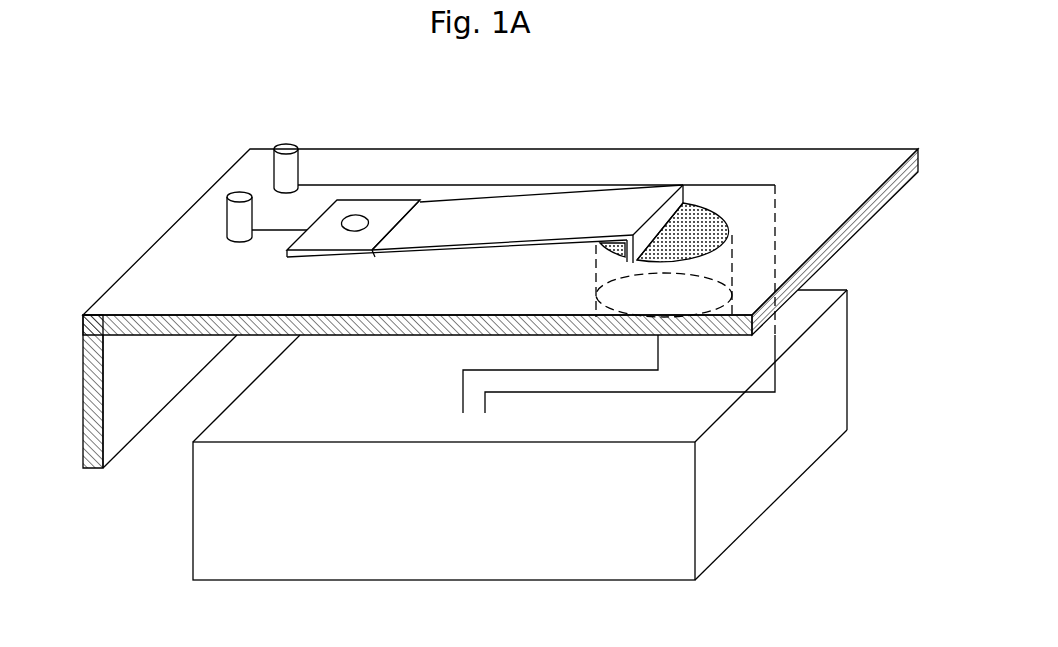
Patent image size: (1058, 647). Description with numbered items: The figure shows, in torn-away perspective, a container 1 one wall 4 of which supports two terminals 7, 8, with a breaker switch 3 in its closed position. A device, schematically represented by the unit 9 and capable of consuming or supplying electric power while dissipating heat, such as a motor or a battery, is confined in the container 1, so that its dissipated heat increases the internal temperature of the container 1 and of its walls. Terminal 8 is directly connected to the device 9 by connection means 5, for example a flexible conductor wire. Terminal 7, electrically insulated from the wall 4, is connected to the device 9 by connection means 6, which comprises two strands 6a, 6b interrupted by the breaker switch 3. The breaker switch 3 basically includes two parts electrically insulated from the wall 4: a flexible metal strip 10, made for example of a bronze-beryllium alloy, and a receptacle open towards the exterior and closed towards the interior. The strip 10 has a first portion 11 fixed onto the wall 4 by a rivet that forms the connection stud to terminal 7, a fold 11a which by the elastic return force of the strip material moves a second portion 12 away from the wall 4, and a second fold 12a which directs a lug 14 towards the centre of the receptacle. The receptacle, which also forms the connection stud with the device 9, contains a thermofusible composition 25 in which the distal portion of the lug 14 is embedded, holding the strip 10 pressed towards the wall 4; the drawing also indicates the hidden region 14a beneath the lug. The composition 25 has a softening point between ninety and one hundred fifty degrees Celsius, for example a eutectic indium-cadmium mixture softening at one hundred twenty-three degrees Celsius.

The container 1 is at (500, 286).
The breaker switch 3 is at (552, 195).
The wall 4 is at (171, 279).
The connection means 5 is at (349, 184).
The connection means 6 is at (461, 346).
The strand 6a is at (270, 233).
The strand 6b is at (462, 385).
The terminal 7 is at (238, 194).
The terminal 8 is at (286, 146).
The device (unit) 9 is at (743, 482).
The flexible metal strip 10 is at (560, 188).
The first portion 11 is at (390, 210).
The fold 11a is at (402, 217).
The second portion 12 is at (487, 217).
The second fold 12a is at (655, 200).
The lug 14 is at (683, 200).
The counter electrode (hidden) 14a is at (640, 296).
The thermofusible composition 25 is at (733, 219).